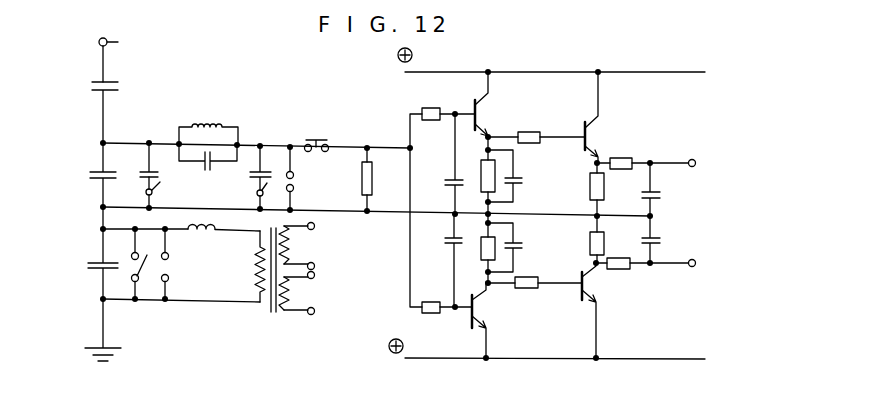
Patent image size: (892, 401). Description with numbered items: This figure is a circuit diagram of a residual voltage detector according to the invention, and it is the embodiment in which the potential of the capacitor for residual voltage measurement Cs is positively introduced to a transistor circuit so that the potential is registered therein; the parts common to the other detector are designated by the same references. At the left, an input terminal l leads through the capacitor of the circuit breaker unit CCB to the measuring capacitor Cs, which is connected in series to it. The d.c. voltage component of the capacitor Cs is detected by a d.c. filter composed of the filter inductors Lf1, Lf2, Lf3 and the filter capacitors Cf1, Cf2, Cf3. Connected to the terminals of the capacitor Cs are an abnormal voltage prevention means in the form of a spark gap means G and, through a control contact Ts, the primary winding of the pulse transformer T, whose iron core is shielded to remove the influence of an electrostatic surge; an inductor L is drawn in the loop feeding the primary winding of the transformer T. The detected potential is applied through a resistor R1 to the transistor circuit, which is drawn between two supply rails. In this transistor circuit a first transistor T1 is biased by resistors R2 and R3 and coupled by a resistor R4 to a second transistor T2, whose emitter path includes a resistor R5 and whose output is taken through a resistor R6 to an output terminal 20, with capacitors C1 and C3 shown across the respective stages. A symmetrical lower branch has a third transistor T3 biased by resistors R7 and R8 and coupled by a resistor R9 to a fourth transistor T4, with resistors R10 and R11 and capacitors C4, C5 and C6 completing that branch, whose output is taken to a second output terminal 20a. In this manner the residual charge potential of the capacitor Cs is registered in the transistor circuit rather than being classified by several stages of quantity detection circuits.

The input terminal l is at (116, 55).
The capacitor of the circuit breaker unit CCB is at (119, 88).
The capacitor for residual voltage measurement Cs is at (90, 176).
The filter capacitor Cf1 is at (143, 171).
The filter inductor Lf1 is at (208, 119).
The filter capacitor Cf2 is at (210, 151).
The filter capacitor Cf3 is at (264, 168).
The filter inductor Lf2 is at (170, 192).
The filter inductor Lf3 is at (256, 192).
The spark gap means G is at (301, 178).
The control contact Ts is at (322, 133).
The resistor R1 is at (383, 179).
The inductor L is at (201, 244).
The pulse transformer T is at (285, 278).
The resistor R2 is at (426, 108).
The resistor R7 is at (434, 245).
The capacitor C1 is at (440, 164).
The capacitor C4 is at (439, 260).
The transistor T1 is at (487, 111).
The resistor R3 is at (481, 178).
The resistor R4 is at (536, 124).
The transistor T2 is at (608, 117).
The resistor R5 is at (590, 190).
The resistor R6 is at (623, 151).
The output terminal 20 is at (692, 159).
The capacitor C3 is at (666, 189).
The capacitor C6 is at (666, 239).
The output terminal 20a is at (692, 267).
The resistor R10 is at (590, 250).
The resistor R11 is at (617, 270).
The transistor T4 is at (606, 310).
The resistor R9 is at (535, 296).
The capacitor C5 is at (521, 247).
The resistor R8 is at (482, 247).
The transistor T3 is at (488, 320).